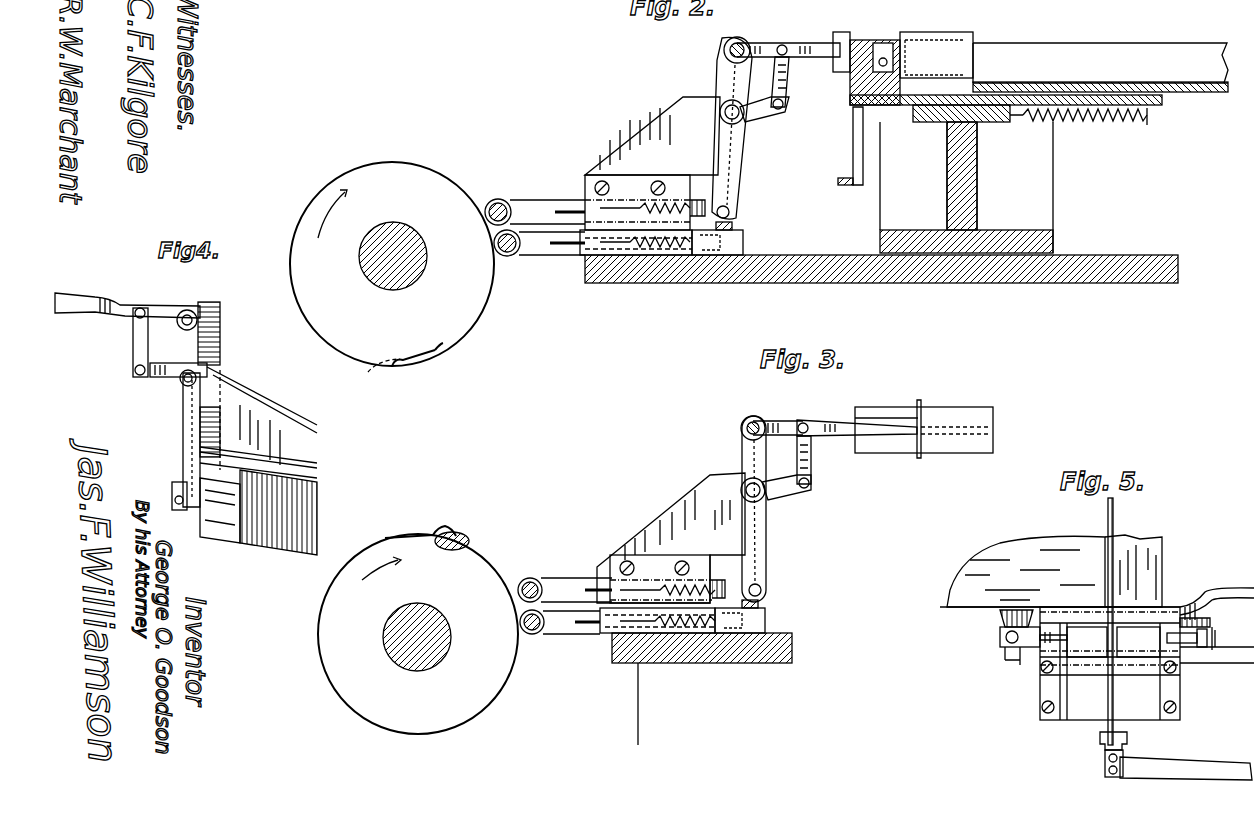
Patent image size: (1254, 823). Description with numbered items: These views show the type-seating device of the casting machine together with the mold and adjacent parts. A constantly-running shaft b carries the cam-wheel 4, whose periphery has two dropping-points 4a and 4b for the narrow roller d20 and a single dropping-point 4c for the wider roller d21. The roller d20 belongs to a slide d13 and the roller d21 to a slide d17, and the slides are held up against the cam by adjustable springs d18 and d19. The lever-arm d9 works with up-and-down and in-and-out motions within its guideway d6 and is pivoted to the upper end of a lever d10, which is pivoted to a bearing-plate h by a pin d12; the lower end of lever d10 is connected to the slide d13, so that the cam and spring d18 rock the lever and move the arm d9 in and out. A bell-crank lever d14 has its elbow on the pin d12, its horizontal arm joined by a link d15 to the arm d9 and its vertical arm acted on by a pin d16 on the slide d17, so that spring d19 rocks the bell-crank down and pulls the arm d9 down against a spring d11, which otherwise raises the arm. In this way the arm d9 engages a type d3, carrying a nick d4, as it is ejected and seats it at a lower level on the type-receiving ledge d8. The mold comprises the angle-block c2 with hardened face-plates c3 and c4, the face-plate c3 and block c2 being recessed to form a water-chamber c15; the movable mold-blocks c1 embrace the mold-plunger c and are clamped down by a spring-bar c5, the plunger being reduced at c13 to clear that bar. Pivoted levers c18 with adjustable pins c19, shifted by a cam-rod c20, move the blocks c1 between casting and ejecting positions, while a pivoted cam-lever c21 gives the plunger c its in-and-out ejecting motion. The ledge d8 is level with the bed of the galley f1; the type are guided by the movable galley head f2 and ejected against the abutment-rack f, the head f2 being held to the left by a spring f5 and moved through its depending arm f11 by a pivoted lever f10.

In FIG. 2, the cam-wheel 4 is at (408, 165).
In FIG. 3, the cam-wheel 4 is at (418, 634).
In FIG. 3, the dropping-point 4a is at (456, 536).
In FIG. 2, the dropping-point 4b is at (433, 352).
In FIG. 3, the dropping-point 4b is at (408, 535).
In FIG. 2, the dropping-point 4c is at (390, 376).
In FIG. 3, the dropping-point 4c is at (442, 527).
In FIG. 2, the shaft b is at (362, 255).
In FIG. 3, the shaft b is at (382, 637).
In FIG. 2, the bearing-plate h is at (670, 118).
In FIG. 3, the bearing-plate h is at (668, 515).
In FIG. 2, the type d3 is at (905, 40).
In FIG. 3, the type d3 is at (955, 424).
In FIG. 3, the nick d4 is at (922, 433).
In FIG. 2, the guideway d6 is at (842, 32).
In FIG. 3, the guideway d6 is at (890, 420).
In FIG. 2, the type-receiving ledge d8 is at (903, 64).
In FIG. 2, the lever-arm d9 is at (830, 58).
In FIG. 3, the lever-arm d9 is at (832, 423).
In FIG. 4, the lever-arm d9 is at (118, 300).
In FIG. 5, the lever-arm d9 is at (1213, 595).
In FIG. 2, the lever d10 is at (720, 80).
In FIG. 3, the lever d10 is at (743, 460).
In FIG. 4, the lever d10 is at (198, 343).
In FIG. 2, the spring d11 is at (752, 45).
In FIG. 3, the spring d11 is at (785, 425).
In FIG. 4, the spring d11 is at (203, 328).
In FIG. 2, the pin d12 is at (720, 114).
In FIG. 3, the pin d12 is at (745, 495).
In FIG. 4, the pin d12 is at (182, 385).
In FIG. 2, the slide d13 is at (705, 200).
In FIG. 3, the slide d13 is at (725, 581).
In FIG. 4, the slide d13 is at (230, 483).
In FIG. 2, the bell-crank lever d14 is at (760, 115).
In FIG. 3, the bell-crank lever d14 is at (792, 492).
In FIG. 4, the bell-crank lever d14 is at (160, 380).
In FIG. 2, the link d15 is at (778, 65).
In FIG. 3, the link d15 is at (811, 452).
In FIG. 4, the link d15 is at (133, 342).
In FIG. 2, the pin d16 is at (745, 230).
In FIG. 3, the pin d16 is at (768, 606).
In FIG. 4, the pin d16 is at (170, 488).
In FIG. 2, the slide d17 is at (745, 248).
In FIG. 3, the slide d17 is at (767, 625).
In FIG. 4, the slide d17 is at (216, 515).
In FIG. 2, the spring d18 is at (652, 205).
In FIG. 3, the spring d18 is at (680, 590).
In FIG. 2, the spring d19 is at (645, 252).
In FIG. 3, the spring d19 is at (685, 634).
In FIG. 2, the roller d20 is at (498, 199).
In FIG. 3, the roller d20 is at (532, 578).
In FIG. 2, the roller d21 is at (508, 257).
In FIG. 3, the roller d21 is at (532, 635).
In FIG. 5, the abutment-rack f is at (1114, 518).
In FIG. 2, the galley f1 is at (1078, 82).
In FIG. 5, the galley f1 is at (1022, 553).
In FIG. 2, the galley head f2 is at (850, 82).
In FIG. 5, the galley head f2 is at (1160, 555).
In FIG. 2, the spring f5 is at (1095, 122).
In FIG. 2, the lever f10 is at (838, 182).
In FIG. 2, the depending arm f11 is at (863, 150).
In FIG. 5, the mold-plunger c is at (1226, 640).
In FIG. 5, the movable mold-blocks c1 is at (1085, 712).
In FIG. 5, the angle-block c2 is at (1168, 610).
In FIG. 5, the face-plate c3 is at (1113, 642).
In FIG. 5, the face-plate c4 is at (1060, 690).
In FIG. 5, the spring-bar c5 is at (1076, 608).
In FIG. 5, the reduced portion c13 is at (1030, 650).
In FIG. 5, the water-chamber c15 is at (1085, 668).
In FIG. 5, the pivoted levers c18 is at (1213, 632).
In FIG. 5, the adjustable pins c19 is at (1056, 635).
In FIG. 5, the cam-rod c20 is at (1225, 655).
In FIG. 5, the cam-lever c21 is at (1203, 762).